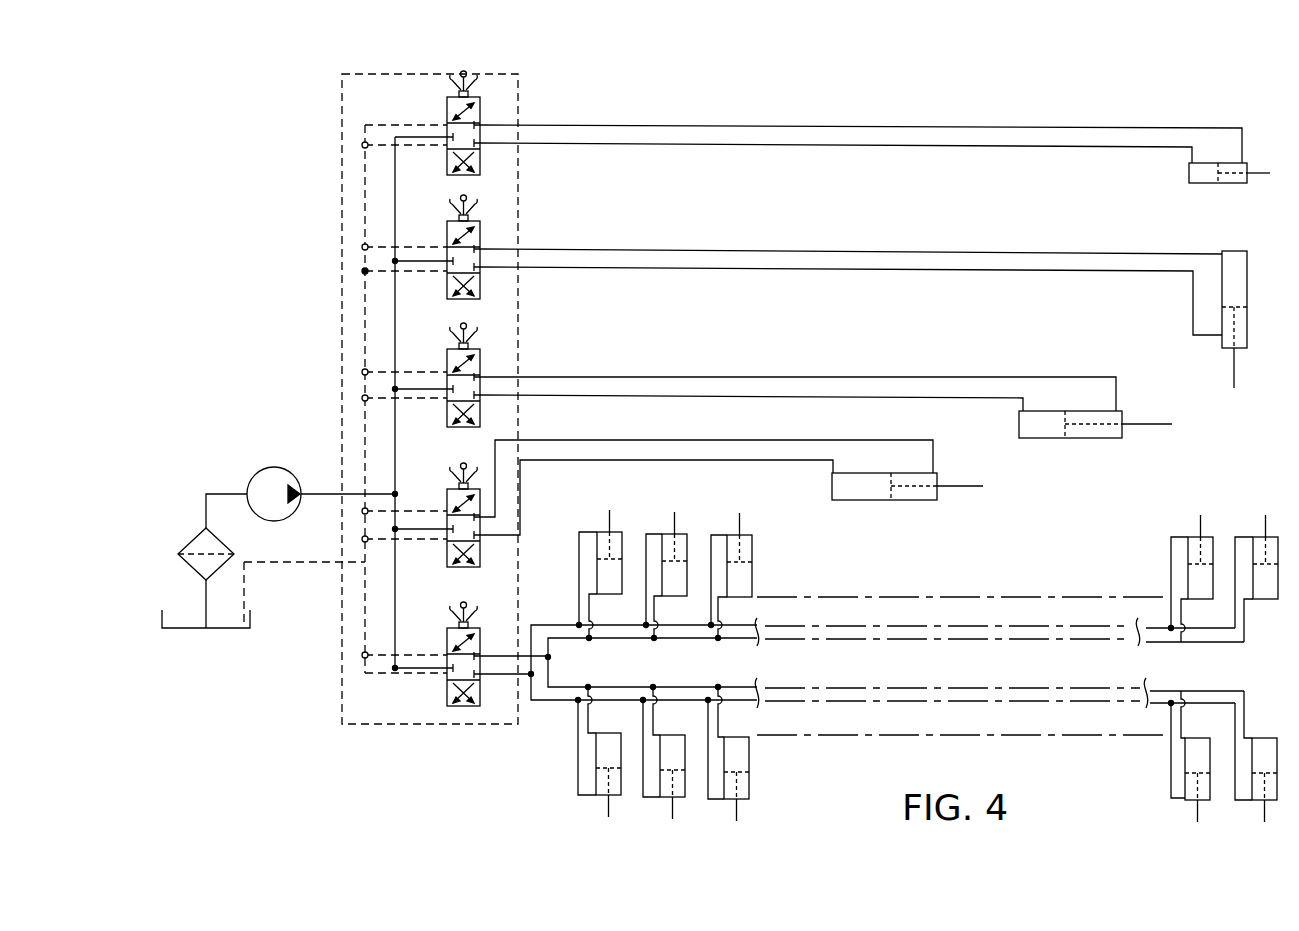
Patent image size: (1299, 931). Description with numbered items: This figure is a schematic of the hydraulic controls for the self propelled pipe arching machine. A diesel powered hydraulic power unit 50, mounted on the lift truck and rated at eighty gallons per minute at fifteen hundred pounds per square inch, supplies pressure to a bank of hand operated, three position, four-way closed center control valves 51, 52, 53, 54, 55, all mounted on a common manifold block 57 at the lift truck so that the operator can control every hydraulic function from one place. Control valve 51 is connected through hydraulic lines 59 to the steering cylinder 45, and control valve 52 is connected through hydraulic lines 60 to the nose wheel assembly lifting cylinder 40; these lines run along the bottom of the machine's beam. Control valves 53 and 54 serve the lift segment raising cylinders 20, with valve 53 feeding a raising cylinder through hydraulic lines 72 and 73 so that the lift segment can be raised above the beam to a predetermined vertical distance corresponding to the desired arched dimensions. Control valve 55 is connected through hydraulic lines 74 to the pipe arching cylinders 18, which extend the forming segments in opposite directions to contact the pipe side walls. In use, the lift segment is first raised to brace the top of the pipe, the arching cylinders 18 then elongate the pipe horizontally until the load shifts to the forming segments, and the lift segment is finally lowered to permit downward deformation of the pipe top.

The pipe arching cylinders 18 is at (727, 535).
The lift segment raising cylinders 20 is at (1042, 438).
The nose wheel assembly lifting cylinder 40 is at (1247, 290).
The steering cylinder 45 is at (1245, 163).
The hydraulic power unit 50 is at (225, 460).
The control valve 51 is at (447, 120).
The control valve 52 is at (447, 248).
The control valve 53 is at (447, 360).
The control valve 54 is at (447, 497).
The control valve 55 is at (447, 636).
The common manifold block 57 is at (390, 727).
The hydraulic lines 59 is at (812, 126).
The hydraulic lines 60 is at (809, 258).
The hydraulic lines 72 is at (656, 376).
The hydraulic lines 73 is at (627, 440).
The hydraulic lines 74 is at (527, 655).